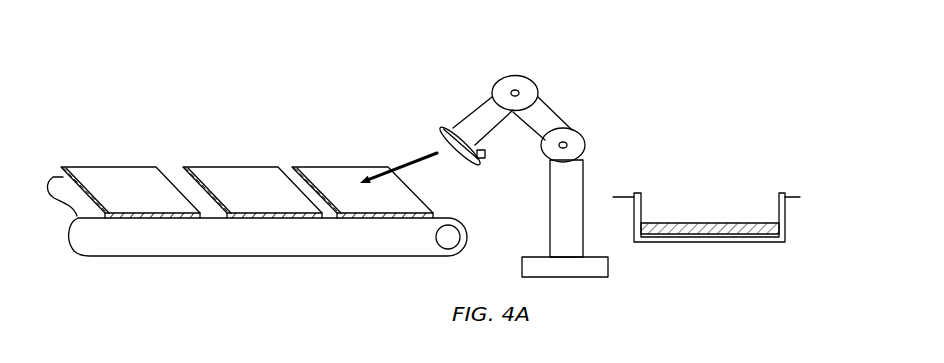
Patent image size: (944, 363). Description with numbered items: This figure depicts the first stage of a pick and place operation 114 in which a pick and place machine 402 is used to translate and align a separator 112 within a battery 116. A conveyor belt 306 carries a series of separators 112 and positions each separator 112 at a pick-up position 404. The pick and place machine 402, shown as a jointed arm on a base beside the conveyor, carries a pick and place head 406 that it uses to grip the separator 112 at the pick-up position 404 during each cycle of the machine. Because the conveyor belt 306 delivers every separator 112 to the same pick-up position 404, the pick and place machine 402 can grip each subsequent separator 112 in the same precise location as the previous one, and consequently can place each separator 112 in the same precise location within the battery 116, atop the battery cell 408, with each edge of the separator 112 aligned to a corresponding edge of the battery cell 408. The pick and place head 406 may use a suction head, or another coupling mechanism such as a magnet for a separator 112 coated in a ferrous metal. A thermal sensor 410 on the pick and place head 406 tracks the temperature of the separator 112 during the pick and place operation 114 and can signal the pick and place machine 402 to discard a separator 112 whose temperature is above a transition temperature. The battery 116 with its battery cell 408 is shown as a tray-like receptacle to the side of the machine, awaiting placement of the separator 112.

The pick and place operation 114 is at (95, 79).
The separator 112 is at (117, 206).
The conveyor belt 306 is at (252, 257).
The pick and place machine 402 is at (491, 96).
The pick-up position 404 is at (360, 181).
The pick and place head 406 is at (437, 146).
The thermal sensor 410 is at (481, 159).
The battery 116 is at (742, 176).
The battery cell 408 is at (750, 236).